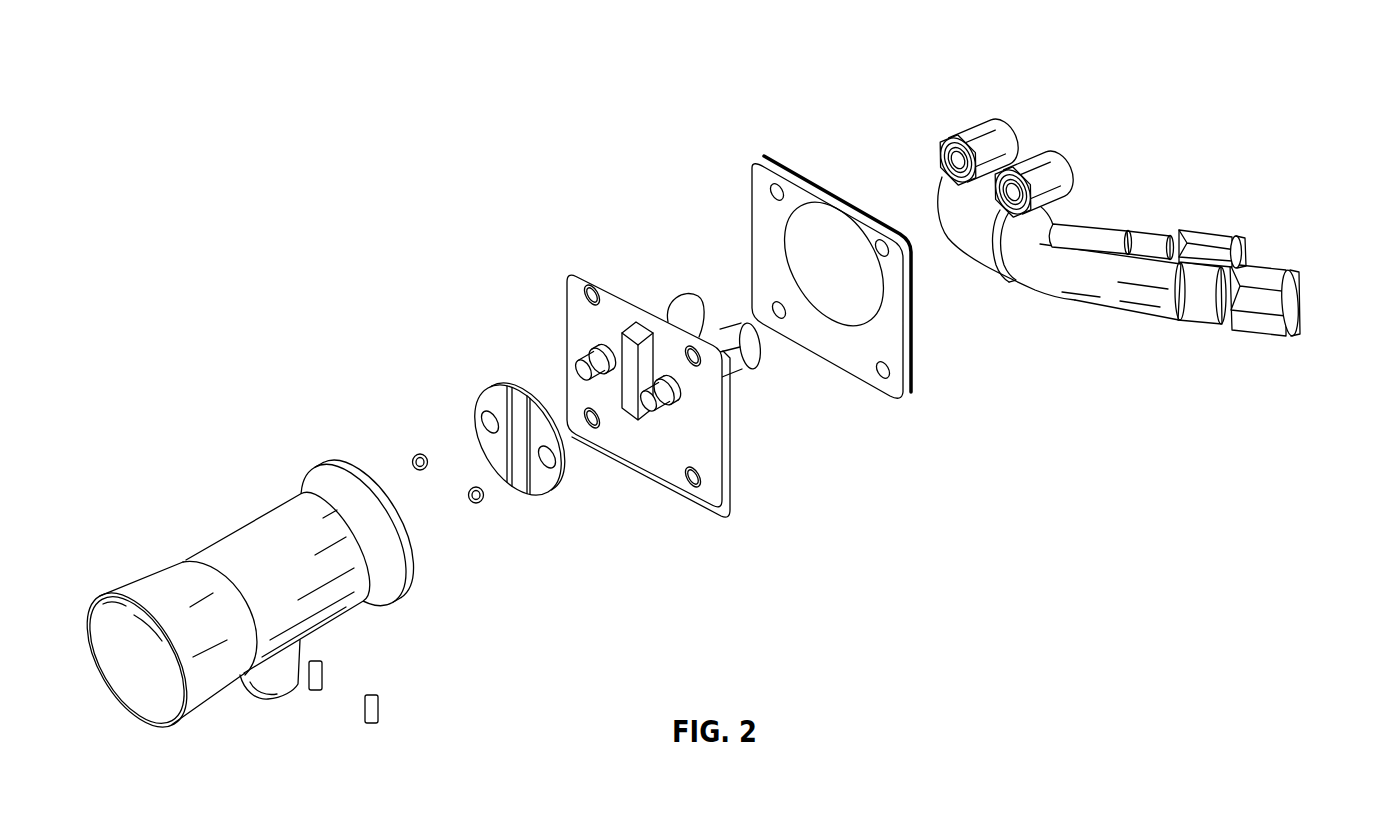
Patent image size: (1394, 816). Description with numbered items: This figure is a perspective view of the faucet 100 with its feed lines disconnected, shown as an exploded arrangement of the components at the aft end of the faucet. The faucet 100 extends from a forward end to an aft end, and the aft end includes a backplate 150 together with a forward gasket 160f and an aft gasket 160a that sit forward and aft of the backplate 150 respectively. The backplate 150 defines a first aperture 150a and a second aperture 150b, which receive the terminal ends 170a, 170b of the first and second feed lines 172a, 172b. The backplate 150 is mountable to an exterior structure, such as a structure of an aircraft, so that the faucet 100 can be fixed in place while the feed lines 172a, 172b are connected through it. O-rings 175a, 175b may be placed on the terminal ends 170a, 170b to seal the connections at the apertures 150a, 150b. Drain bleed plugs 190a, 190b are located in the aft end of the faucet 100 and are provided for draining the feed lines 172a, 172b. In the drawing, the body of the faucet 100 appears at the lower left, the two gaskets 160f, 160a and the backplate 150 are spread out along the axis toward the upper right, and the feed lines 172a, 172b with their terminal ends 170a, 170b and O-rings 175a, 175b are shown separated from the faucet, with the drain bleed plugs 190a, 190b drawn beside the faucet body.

The faucet 100 is at (248, 518).
The backplate 150 is at (610, 271).
The first aperture 150a is at (682, 410).
The second aperture 150b is at (609, 342).
The aft gasket 160a is at (765, 178).
The forward gasket 160f is at (502, 388).
The terminal end of first feed line 170a is at (981, 120).
The terminal end of second feed line 170b is at (1035, 150).
The first feed line 172a is at (1146, 228).
The second feed line 172b is at (1300, 295).
The O-ring 175a is at (478, 504).
The O-ring 175b is at (418, 454).
The drain bleed plug 190a is at (327, 673).
The drain bleed plug 190b is at (383, 712).